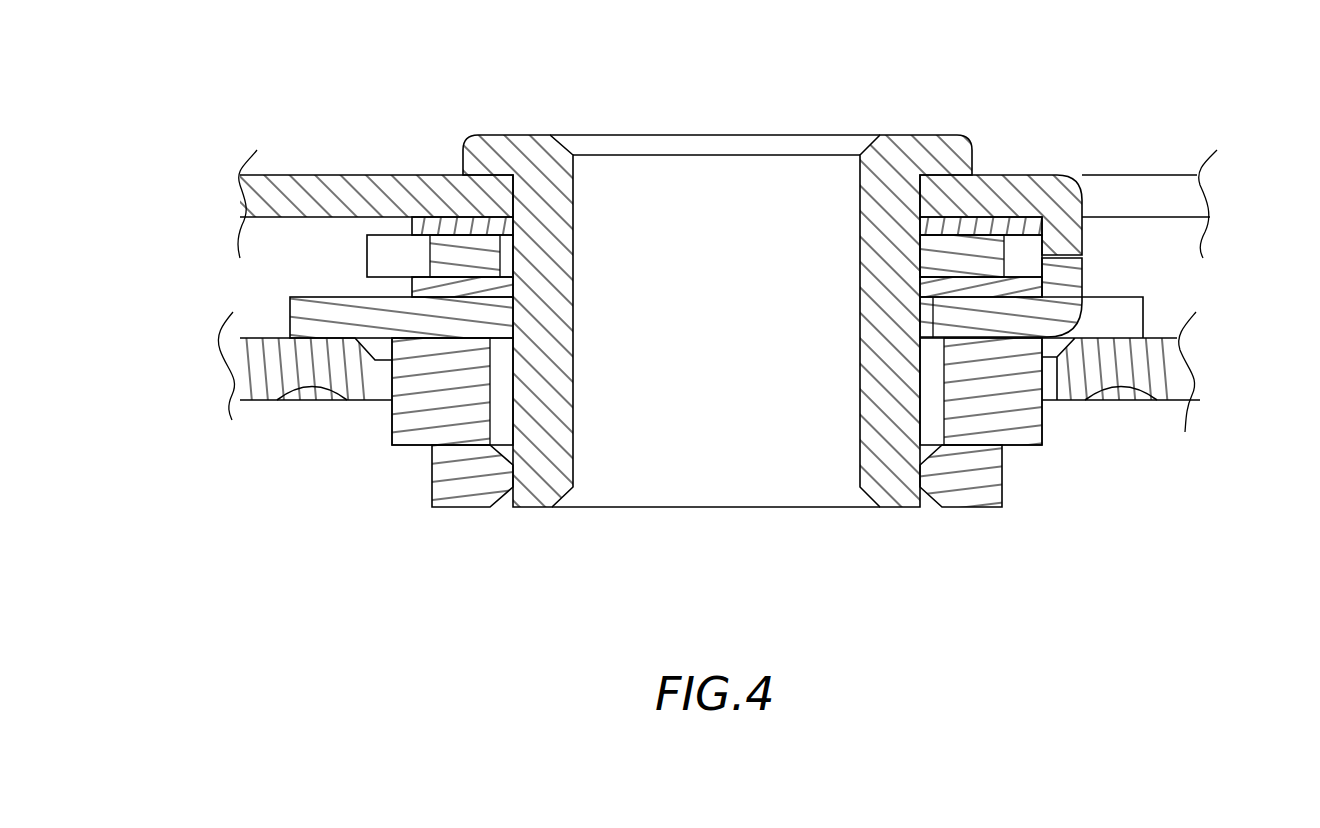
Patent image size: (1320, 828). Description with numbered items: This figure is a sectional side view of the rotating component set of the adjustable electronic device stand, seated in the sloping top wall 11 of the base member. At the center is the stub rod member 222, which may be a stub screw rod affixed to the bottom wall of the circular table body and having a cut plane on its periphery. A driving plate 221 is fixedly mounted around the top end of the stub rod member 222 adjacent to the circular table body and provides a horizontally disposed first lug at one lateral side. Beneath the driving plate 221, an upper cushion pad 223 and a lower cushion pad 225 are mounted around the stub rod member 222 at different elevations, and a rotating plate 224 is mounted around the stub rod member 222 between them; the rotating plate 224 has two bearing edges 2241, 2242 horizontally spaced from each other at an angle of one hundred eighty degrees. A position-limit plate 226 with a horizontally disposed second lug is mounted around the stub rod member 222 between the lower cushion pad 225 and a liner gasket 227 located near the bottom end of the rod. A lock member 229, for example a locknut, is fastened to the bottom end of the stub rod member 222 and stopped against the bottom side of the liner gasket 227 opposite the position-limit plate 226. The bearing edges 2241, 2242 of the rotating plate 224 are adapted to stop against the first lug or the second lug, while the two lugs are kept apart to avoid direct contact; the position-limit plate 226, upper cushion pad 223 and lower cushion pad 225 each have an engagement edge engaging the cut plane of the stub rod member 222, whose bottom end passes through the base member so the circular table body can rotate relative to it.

The sloping top wall 11 is at (1180, 385).
The driving plate 221 is at (1143, 185).
The stub rod member 222 is at (945, 152).
The upper cushion pad 223 is at (430, 225).
The rotating plate 224 is at (300, 320).
The bearing edge 2241 is at (1022, 262).
The bearing edge 2242 is at (380, 260).
The lower cushion pad 225 is at (1030, 288).
The position-limit plate 226 is at (1130, 330).
The liner gasket 227 is at (1022, 428).
The lock member 229 is at (985, 483).